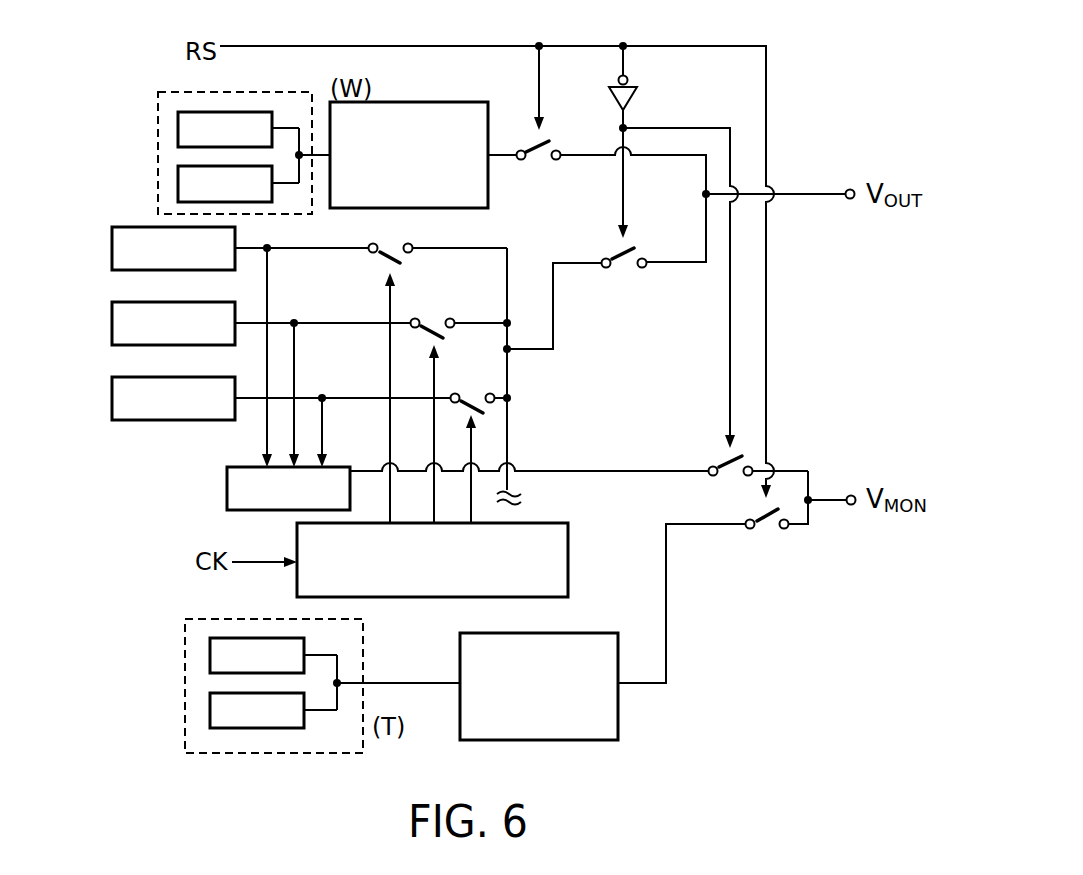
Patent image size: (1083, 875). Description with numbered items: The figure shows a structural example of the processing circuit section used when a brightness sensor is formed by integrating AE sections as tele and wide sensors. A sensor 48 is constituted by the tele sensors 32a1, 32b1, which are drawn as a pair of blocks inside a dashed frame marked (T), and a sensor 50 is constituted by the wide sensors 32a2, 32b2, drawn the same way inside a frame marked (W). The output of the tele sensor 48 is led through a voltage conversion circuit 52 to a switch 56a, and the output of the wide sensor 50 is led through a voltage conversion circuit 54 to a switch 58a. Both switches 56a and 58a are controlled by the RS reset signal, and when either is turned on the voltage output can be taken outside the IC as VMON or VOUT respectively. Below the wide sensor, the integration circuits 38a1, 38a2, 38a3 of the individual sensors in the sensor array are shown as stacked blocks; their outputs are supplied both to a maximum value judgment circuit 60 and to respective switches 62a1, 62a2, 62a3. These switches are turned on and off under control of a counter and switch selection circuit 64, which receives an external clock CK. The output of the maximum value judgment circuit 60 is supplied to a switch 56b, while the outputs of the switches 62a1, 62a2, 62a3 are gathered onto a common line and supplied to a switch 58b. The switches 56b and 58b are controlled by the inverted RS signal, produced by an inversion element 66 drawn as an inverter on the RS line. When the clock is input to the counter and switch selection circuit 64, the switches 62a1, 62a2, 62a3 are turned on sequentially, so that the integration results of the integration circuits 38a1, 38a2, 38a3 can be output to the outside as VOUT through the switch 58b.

The sensor 50 is at (194, 150).
The AE section 32a2 is at (178, 138).
The AE section 32b2 is at (178, 193).
The voltage conversion circuit 54 is at (465, 101).
The switch 58a is at (539, 158).
The inversion element 66 is at (641, 93).
The integration circuit 38a1 is at (112, 260).
The integration circuit 38a2 is at (112, 334).
The integration circuit 38a3 is at (112, 410).
The switch 62a1 is at (382, 259).
The switch 62a2 is at (450, 294).
The switch 62a3 is at (471, 392).
The switch 58b is at (622, 270).
The switch 56b is at (723, 456).
The switch 56a is at (767, 529).
The maximum value judgment circuit 60 is at (227, 492).
The counter and switch selection circuit 64 is at (568, 584).
The sensor 48 is at (273, 686).
The AE section 32a1 is at (210, 670).
The AE section 32b1 is at (210, 724).
The voltage conversion circuit 52 is at (618, 720).